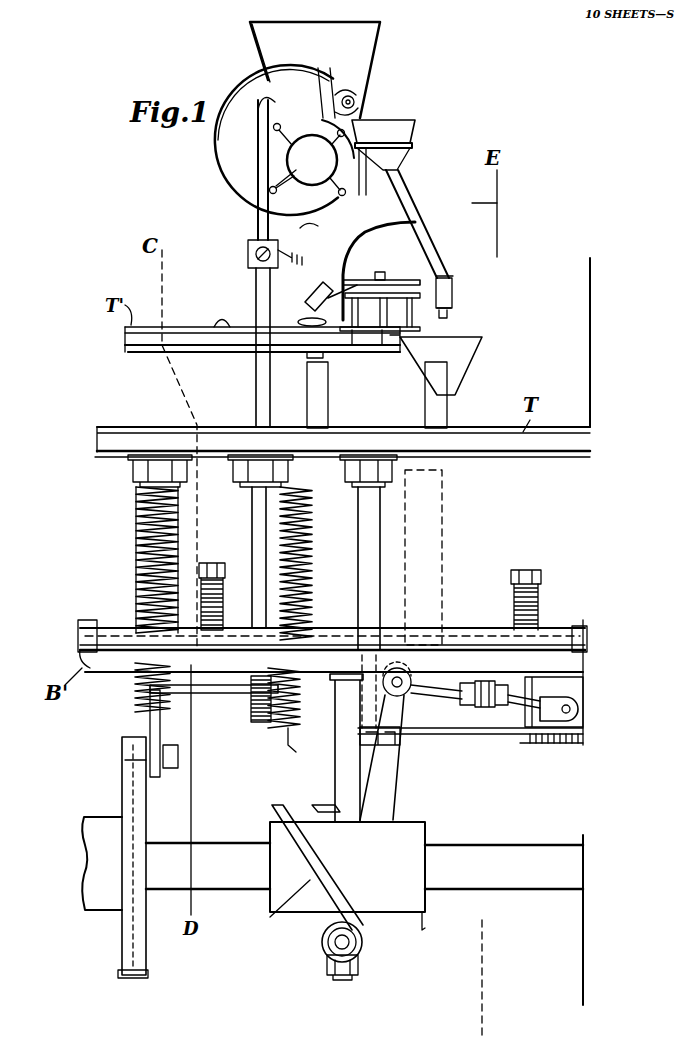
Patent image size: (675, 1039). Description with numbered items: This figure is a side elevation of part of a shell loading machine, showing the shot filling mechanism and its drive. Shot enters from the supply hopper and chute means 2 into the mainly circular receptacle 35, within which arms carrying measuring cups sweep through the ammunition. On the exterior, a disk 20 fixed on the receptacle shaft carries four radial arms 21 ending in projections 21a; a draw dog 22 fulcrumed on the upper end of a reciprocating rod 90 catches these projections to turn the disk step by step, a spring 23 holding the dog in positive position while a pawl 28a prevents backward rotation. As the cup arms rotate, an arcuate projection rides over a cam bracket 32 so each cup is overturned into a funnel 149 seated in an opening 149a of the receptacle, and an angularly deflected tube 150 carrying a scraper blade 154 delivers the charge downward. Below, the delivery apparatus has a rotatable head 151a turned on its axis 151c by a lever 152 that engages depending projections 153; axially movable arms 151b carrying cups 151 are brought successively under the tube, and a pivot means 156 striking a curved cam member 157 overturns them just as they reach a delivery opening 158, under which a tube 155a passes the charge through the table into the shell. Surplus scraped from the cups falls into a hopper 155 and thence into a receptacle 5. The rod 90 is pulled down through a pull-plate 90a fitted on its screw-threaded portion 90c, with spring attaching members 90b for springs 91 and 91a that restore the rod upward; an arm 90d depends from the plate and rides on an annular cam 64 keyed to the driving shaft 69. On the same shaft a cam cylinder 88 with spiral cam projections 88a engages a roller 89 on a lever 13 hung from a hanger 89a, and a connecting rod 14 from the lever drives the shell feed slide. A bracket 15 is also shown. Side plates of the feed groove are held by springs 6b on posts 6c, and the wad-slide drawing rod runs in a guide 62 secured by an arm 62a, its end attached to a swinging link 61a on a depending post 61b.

The supply hopper and chute means 2 is at (300, 28).
The draw dog 22 is at (262, 98).
The receptacle 35 is at (222, 153).
The disk 20 is at (312, 160).
The radial arms 21 is at (366, 118).
The projections 21a is at (272, 190).
The spring 23 is at (315, 220).
The pawl 28a is at (362, 82).
The funnel 149 is at (412, 126).
The opening 149a is at (395, 168).
The cam bracket 32 is at (398, 170).
The tube 150 is at (385, 215).
The axis 151c is at (468, 204).
The scraper blade 154 is at (447, 276).
The cups 151 is at (452, 296).
The lever 152 is at (449, 322).
The axially movable arms 151b is at (368, 271).
The head 151a is at (381, 270).
The depending projections 153 is at (420, 327).
The pivot means 156 is at (348, 332).
The curved or cam member 157 is at (383, 330).
The hopper 155 is at (478, 348).
The tube 155a is at (328, 405).
The delivery opening 158 is at (222, 318).
The bracket 15 is at (248, 255).
The reciprocating rod 90 is at (257, 388).
The pull-plate 90a is at (233, 483).
The spring 91a is at (180, 548).
The spring 91 is at (300, 553).
The depending post 61b is at (360, 522).
The receptacle 5 is at (423, 557).
The posts 6c is at (535, 574).
The springs 6b is at (537, 605).
The spring attaching members 90b is at (140, 722).
The screw-threaded portion 90c is at (252, 722).
The arm 90d is at (152, 735).
The annular cam 64 is at (142, 963).
The driving shaft 69 is at (560, 882).
The cam cylinder 88 is at (405, 840).
The spiral cam projections 88a is at (310, 880).
The roller 89 is at (362, 945).
The hanger 89a is at (345, 750).
The swinging link 61a is at (383, 728).
The lever 13 is at (385, 762).
The connecting rod 14 is at (447, 690).
The guide 62 is at (555, 733).
The arm 62a is at (517, 727).